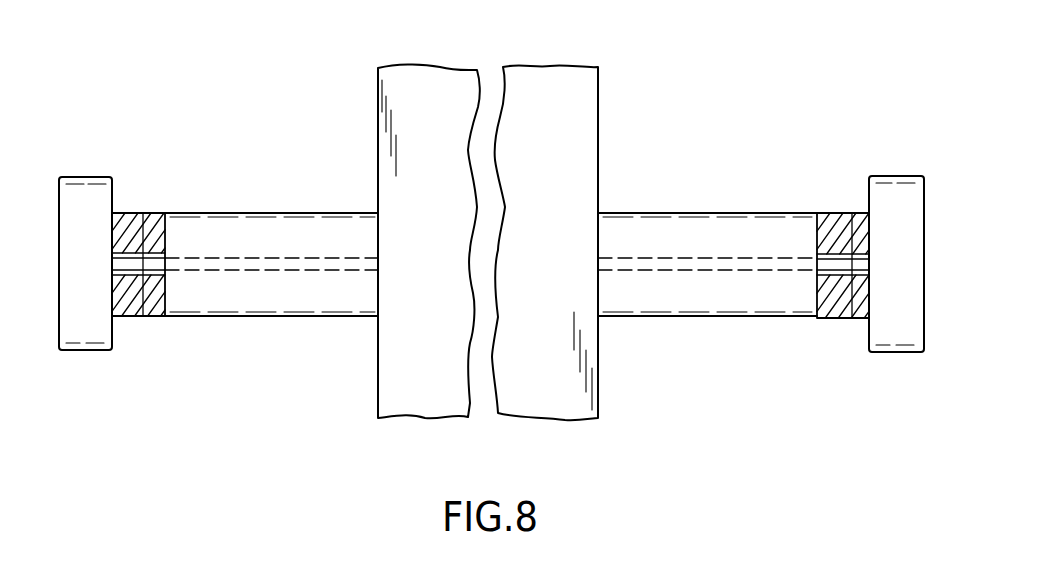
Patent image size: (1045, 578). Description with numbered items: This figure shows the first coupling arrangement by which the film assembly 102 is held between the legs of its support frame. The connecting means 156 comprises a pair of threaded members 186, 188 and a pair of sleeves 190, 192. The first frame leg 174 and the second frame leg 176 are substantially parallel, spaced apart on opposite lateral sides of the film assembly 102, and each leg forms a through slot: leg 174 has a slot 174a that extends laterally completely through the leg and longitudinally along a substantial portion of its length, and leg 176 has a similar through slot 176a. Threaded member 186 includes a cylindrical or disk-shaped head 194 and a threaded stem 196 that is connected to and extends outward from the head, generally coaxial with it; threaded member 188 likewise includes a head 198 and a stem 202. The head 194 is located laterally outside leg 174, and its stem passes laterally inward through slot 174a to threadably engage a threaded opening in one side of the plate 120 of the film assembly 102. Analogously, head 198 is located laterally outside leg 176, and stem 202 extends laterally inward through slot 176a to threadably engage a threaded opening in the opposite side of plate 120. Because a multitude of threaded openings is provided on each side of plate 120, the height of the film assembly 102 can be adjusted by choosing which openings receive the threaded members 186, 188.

The film assembly 102 is at (507, 229).
The plate 120 is at (606, 80).
The connecting means 156 is at (436, 240).
The first frame leg 174 is at (126, 305).
The slot 174a is at (141, 317).
The second frame leg 176 is at (828, 300).
The slot 176a is at (854, 318).
The threaded member 186 is at (173, 363).
The threaded member 188 is at (830, 352).
The sleeve 190 is at (218, 213).
The sleeve 192 is at (684, 213).
The head 194 is at (83, 177).
The stem 196 is at (148, 213).
The head 198 is at (903, 190).
The stem 202 is at (842, 254).